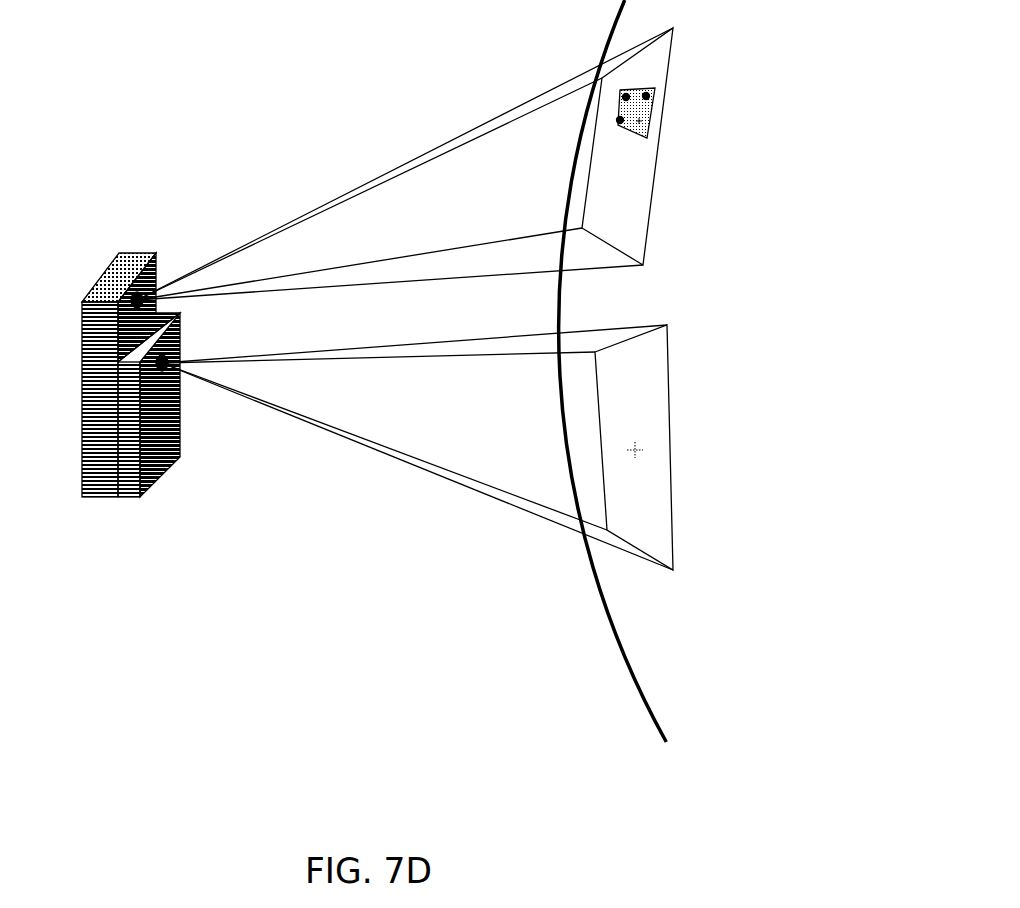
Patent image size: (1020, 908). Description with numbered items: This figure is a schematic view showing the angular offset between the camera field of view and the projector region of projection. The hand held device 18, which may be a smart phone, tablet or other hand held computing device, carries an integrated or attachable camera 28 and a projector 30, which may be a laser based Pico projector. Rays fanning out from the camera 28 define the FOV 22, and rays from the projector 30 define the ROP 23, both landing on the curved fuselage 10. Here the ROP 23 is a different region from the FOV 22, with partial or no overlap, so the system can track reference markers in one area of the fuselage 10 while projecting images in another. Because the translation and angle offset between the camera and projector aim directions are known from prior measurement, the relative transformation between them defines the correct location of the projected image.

The fuselage 10 is at (716, 638).
The hand held device 18 is at (129, 228).
The FOV 22 is at (650, 188).
The ROP 23 is at (665, 397).
The camera 28 is at (141, 296).
The projector 30 is at (166, 368).